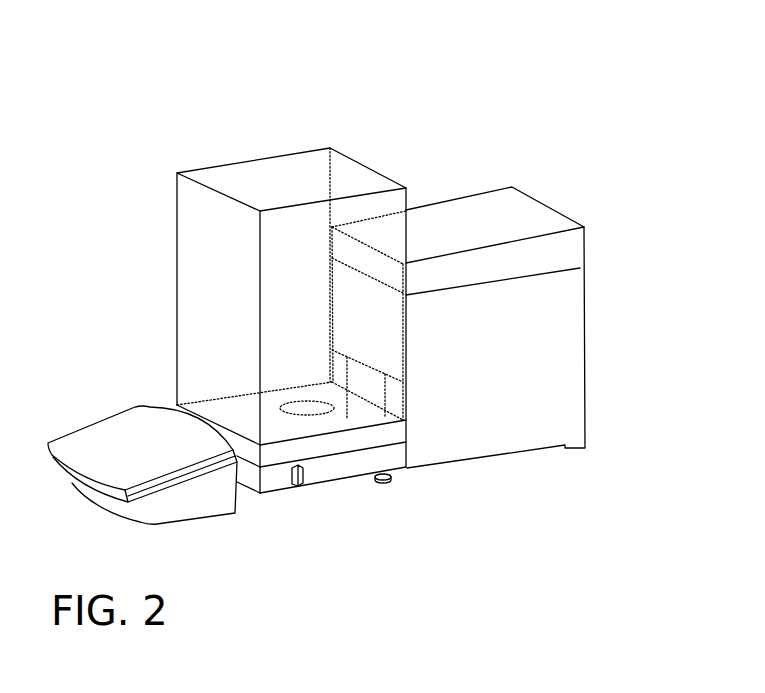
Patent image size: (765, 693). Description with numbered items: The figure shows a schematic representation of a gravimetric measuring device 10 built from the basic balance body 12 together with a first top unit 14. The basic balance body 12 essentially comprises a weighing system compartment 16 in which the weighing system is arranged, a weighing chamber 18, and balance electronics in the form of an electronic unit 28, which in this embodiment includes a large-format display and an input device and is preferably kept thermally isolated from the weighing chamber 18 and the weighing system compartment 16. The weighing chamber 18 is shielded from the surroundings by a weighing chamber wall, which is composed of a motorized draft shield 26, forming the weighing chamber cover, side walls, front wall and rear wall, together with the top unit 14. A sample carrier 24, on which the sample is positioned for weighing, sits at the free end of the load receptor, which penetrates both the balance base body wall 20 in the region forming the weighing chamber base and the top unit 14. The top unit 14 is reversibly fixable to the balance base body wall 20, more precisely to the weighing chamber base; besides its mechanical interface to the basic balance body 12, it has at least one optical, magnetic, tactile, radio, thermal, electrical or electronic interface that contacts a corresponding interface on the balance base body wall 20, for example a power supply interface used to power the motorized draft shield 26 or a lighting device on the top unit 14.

The gravimetric measuring device 10 is at (518, 137).
The basic balance body 12 is at (554, 477).
The first top unit 14 is at (333, 447).
The weighing system compartment 16 is at (535, 223).
The weighing chamber 18 is at (263, 184).
The balance base body wall 20 is at (380, 463).
The sample carrier 24 is at (307, 408).
The motorized draft shield 26 is at (177, 280).
The electronic unit 28 is at (123, 433).